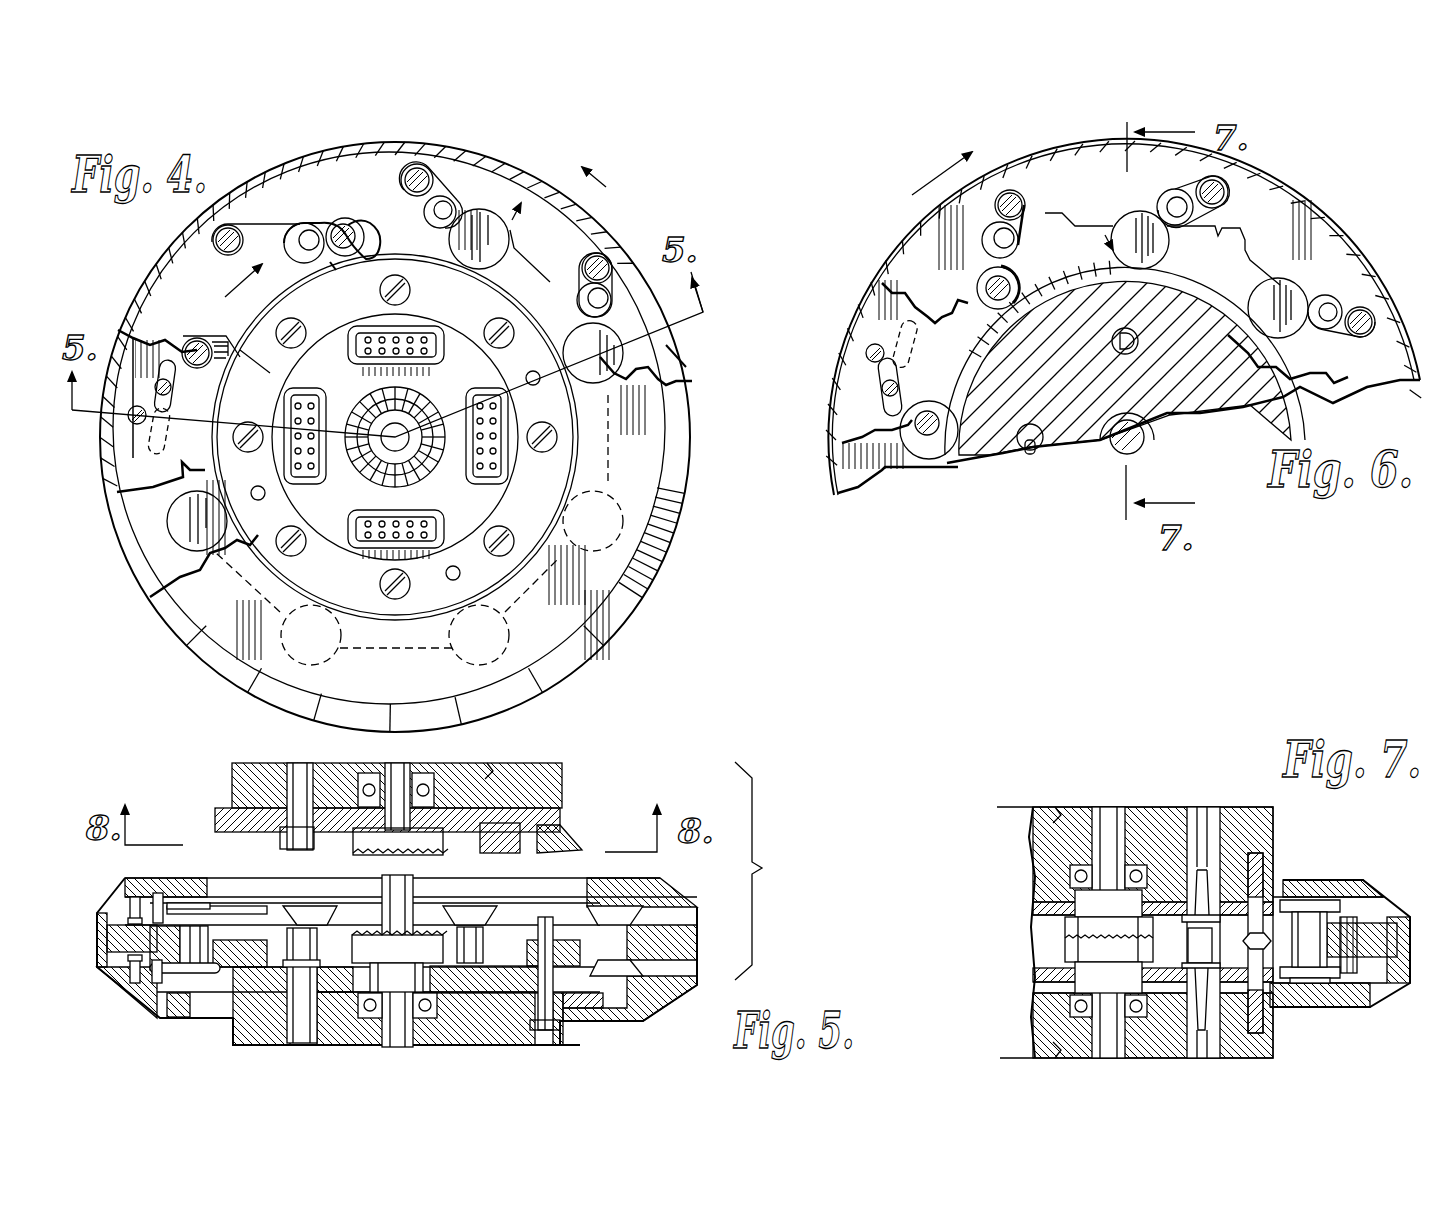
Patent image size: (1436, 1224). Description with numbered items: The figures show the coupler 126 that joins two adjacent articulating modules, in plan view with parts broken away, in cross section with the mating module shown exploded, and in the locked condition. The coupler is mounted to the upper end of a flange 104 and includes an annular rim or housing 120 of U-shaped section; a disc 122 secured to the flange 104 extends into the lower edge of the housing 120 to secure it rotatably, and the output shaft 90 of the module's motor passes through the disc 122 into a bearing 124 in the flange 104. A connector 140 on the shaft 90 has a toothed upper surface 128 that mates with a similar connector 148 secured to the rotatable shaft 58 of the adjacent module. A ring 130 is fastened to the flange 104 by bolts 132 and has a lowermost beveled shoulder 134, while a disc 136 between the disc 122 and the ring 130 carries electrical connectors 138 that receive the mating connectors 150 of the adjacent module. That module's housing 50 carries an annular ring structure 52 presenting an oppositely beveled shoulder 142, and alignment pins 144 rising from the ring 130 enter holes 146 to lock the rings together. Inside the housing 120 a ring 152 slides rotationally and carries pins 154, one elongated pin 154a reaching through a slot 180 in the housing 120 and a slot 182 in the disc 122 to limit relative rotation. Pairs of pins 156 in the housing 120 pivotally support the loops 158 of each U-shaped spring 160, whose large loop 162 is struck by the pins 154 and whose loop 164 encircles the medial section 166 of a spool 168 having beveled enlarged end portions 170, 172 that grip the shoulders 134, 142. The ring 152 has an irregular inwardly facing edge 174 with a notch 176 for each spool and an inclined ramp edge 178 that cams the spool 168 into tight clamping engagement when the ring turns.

In FIG. 5, the housing 50 is at (240, 775).
In FIG. 5, the annular ring structure 52 is at (232, 830).
In FIG. 7, the annular ring structure 52 is at (1270, 925).
In FIG. 5, the rotatable shaft 58 is at (394, 770).
In FIG. 7, the rotatable shaft 58 is at (1103, 822).
In FIG. 4, the output shaft 90 is at (385, 445).
In FIG. 5, the output shaft 90 is at (398, 1040).
In FIG. 7, the output shaft 90 is at (1100, 1030).
In FIG. 5, the flange 104 is at (548, 1035).
In FIG. 4, the annular rim or housing 120 is at (143, 575).
In FIG. 6, the annular rim or housing 120 is at (826, 426).
In FIG. 5, the annular rim or housing 120 is at (702, 960).
In FIG. 7, the annular rim or housing 120 is at (1391, 884).
In FIG. 5, the disc 122 is at (620, 997).
In FIG. 7, the disc 122 is at (1262, 990).
In FIG. 5, the bearing 124 is at (386, 1037).
In FIG. 5, the coupler 126 is at (672, 886).
In FIG. 4, the toothed upper surface 128 is at (376, 400).
In FIG. 5, the toothed upper surface 128 is at (372, 933).
In FIG. 4, the ring 130 is at (547, 517).
In FIG. 5, the ring 130 is at (258, 947).
In FIG. 7, the ring 130 is at (1400, 930).
In FIG. 4, the bolts 132 is at (503, 550).
In FIG. 7, the bolts 132 is at (1300, 997).
In FIG. 5, the beveled shoulder 134 is at (226, 976).
In FIG. 6, the disc 136 is at (991, 457).
In FIG. 5, the disc 136 is at (516, 976).
In FIG. 7, the disc 136 is at (1042, 976).
In FIG. 4, the electrical connectors 138 is at (362, 366).
In FIG. 5, the electrical connectors 138 is at (307, 946).
In FIG. 7, the electrical connectors 138 is at (1190, 950).
In FIG. 4, the connector 140 is at (392, 460).
In FIG. 5, the connector 140 is at (377, 1000).
In FIG. 7, the connector 140 is at (1065, 955).
In FIG. 5, the beveled shoulder 142 is at (568, 832).
In FIG. 4, the alignment pins 144 is at (526, 372).
In FIG. 5, the alignment pins 144 is at (543, 920).
In FIG. 5, the holes 146 is at (550, 846).
In FIG. 5, the connector 148 is at (376, 846).
In FIG. 7, the connector 148 is at (1063, 930).
In FIG. 5, the electrical connectors 150 is at (301, 845).
In FIG. 4, the ring 152 is at (549, 268).
In FIG. 6, the ring 152 is at (951, 312).
In FIG. 5, the ring 152 is at (682, 945).
In FIG. 4, the pins 154 is at (300, 234).
In FIG. 4, the elongated pin 154a is at (172, 391).
In FIG. 6, the elongated pin 154a is at (899, 385).
In FIG. 5, the elongated pin 154a is at (160, 897).
In FIG. 4, the pins 156 is at (246, 262).
In FIG. 5, the pins 156 is at (133, 882).
In FIG. 4, the loops 158 is at (222, 252).
In FIG. 5, the loops 158 is at (116, 912).
In FIG. 4, the spring 160 is at (573, 288).
In FIG. 6, the spring 160 is at (975, 256).
In FIG. 4, the loop 162 is at (291, 260).
In FIG. 5, the loop 162 is at (147, 930).
In FIG. 4, the loop 164 is at (346, 237).
In FIG. 4, the medial section 166 is at (328, 226).
In FIG. 4, the spool 168 is at (322, 270).
In FIG. 6, the spool 168 is at (1172, 250).
In FIG. 4, the enlarged end portion 170 is at (466, 258).
In FIG. 5, the enlarged end portion 170 is at (326, 905).
In FIG. 4, the enlarged end portion 172 is at (215, 357).
In FIG. 5, the enlarged end portion 172 is at (188, 977).
In FIG. 6, the inwardly facing edge 174 is at (1090, 236).
In FIG. 6, the notch 176 is at (1047, 215).
In FIG. 6, the ramp edge 178 is at (1222, 230).
In FIG. 4, the slot 180 is at (164, 442).
In FIG. 6, the slot 180 is at (905, 350).
In FIG. 4, the slot 182 is at (157, 388).
In FIG. 6, the slot 182 is at (884, 400).